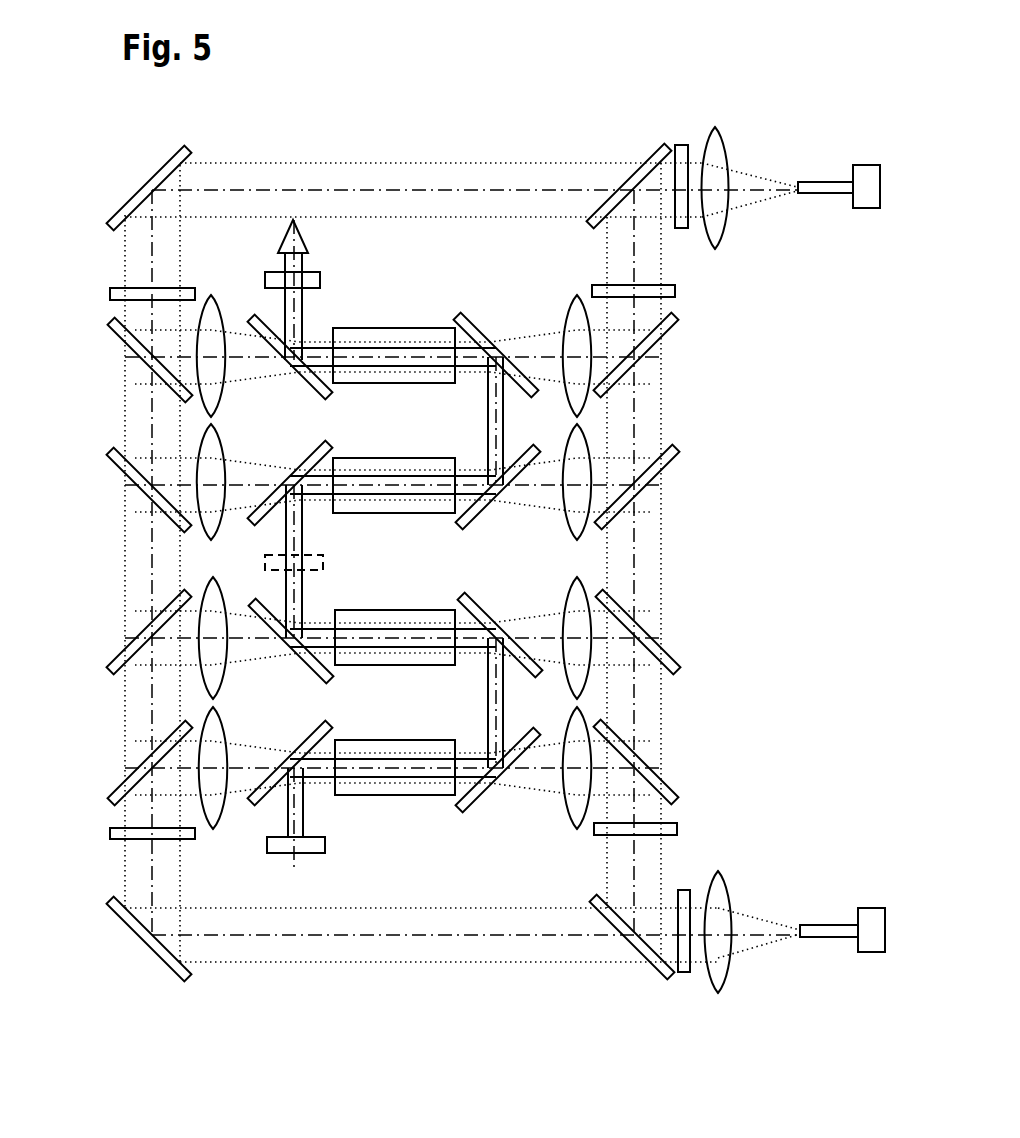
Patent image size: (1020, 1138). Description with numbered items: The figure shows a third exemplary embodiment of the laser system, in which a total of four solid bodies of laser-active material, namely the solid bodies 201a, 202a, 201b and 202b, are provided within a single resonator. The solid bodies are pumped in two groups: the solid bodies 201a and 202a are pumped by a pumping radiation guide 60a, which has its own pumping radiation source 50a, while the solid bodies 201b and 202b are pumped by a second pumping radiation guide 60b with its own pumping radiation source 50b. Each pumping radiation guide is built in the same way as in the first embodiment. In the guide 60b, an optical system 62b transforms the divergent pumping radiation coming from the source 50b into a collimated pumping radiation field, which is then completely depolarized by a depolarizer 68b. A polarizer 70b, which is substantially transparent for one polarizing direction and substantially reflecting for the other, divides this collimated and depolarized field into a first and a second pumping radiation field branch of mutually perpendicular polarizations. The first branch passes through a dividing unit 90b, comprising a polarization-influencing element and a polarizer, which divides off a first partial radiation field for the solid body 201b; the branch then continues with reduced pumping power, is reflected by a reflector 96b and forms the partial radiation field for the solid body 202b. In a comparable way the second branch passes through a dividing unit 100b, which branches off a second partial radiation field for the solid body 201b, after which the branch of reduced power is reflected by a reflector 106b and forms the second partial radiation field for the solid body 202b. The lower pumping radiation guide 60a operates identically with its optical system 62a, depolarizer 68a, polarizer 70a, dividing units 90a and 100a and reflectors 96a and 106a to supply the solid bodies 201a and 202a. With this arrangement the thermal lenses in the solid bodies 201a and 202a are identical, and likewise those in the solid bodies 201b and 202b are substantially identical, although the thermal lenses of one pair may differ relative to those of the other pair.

The solid body 201b is at (417, 330).
The solid body 202b is at (404, 460).
The solid body 202a is at (402, 660).
The solid body 201a is at (422, 788).
The pumping radiation source 50b is at (863, 208).
The pumping radiation source 50a is at (868, 952).
The pumping radiation guide 60b is at (500, 148).
The pumping radiation guide 60a is at (502, 980).
The optical system 62b is at (717, 148).
The optical system 62a is at (720, 970).
The depolarizer 68b is at (679, 146).
The depolarizer 68a is at (681, 974).
The polarizer 70b is at (660, 150).
The polarizer 70a is at (664, 972).
The dividing unit 90b is at (120, 308).
The dividing unit 90a is at (120, 816).
The reflector 96b is at (127, 473).
The reflector 96a is at (128, 645).
The dividing unit 100b is at (677, 298).
The dividing unit 100a is at (677, 821).
The reflector 106b is at (657, 468).
The reflector 106a is at (668, 637).